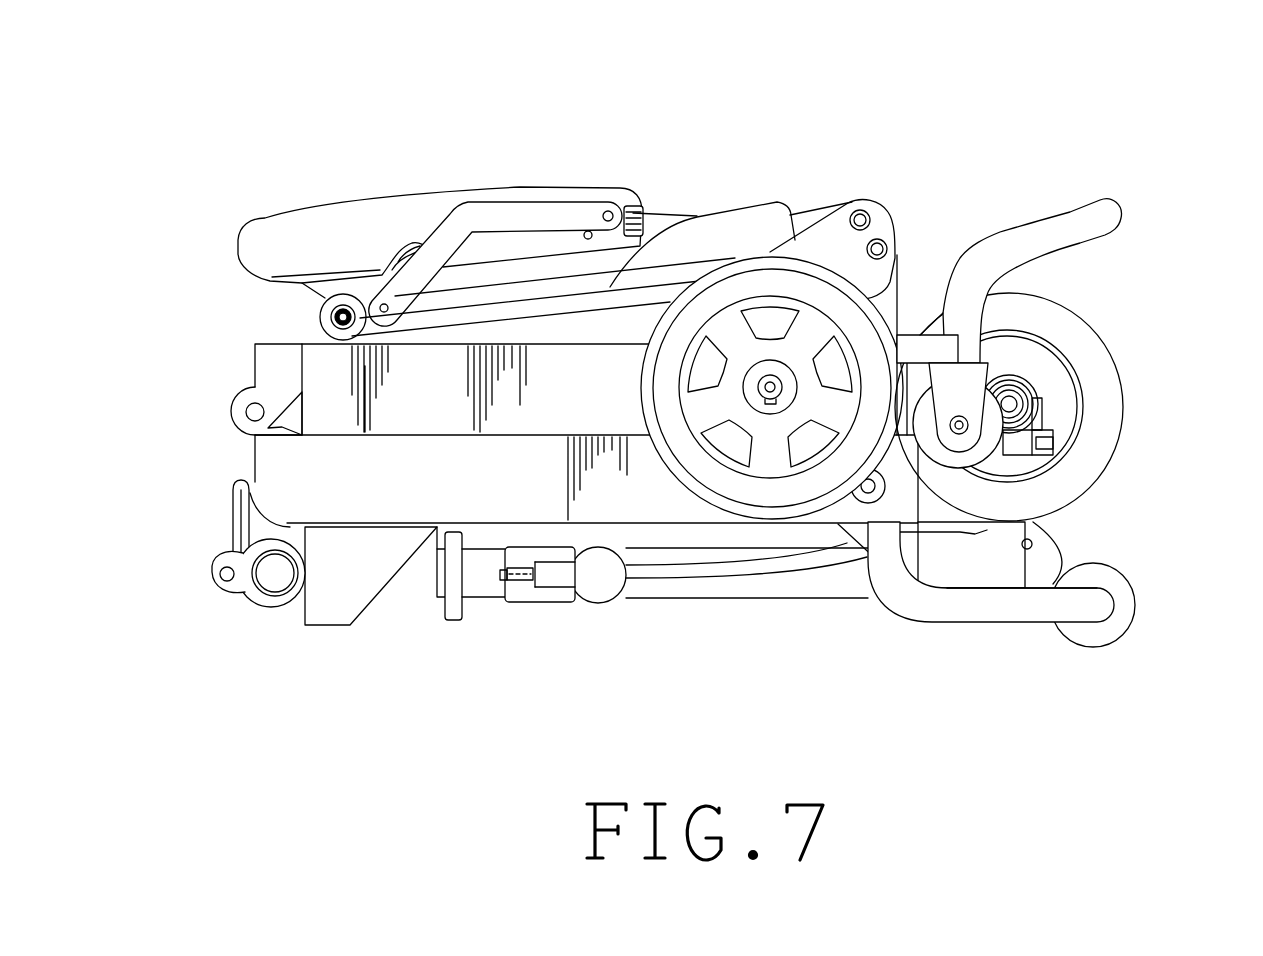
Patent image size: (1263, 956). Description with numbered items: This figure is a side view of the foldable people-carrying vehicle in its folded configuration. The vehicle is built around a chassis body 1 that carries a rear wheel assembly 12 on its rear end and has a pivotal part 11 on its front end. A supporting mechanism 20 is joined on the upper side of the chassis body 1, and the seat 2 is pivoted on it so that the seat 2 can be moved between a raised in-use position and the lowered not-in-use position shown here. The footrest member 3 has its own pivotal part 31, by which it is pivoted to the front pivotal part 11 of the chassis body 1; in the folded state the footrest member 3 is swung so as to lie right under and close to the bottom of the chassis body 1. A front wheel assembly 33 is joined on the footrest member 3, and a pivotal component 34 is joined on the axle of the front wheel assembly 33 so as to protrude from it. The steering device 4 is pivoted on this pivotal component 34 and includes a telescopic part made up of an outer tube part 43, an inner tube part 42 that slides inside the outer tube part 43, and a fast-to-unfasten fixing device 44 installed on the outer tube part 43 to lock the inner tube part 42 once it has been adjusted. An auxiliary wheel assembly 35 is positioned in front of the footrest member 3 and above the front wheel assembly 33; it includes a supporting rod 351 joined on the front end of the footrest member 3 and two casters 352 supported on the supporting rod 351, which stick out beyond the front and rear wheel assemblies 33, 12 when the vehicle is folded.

The chassis body 1 is at (340, 387).
The seat 2 is at (415, 222).
The supporting mechanism 20 is at (610, 287).
The rear wheel assembly 12 is at (865, 333).
The front wheel assembly 33 is at (1097, 370).
The pivotal part 11 is at (273, 368).
The pivotal part 31 is at (282, 430).
The pivotal component 34 is at (1053, 540).
The casters 352 is at (1127, 607).
The steering device 4 is at (280, 608).
The inner tube part 42 is at (415, 580).
The footrest member 3 is at (483, 503).
The fast-to-unfasten fixing device 44 is at (532, 610).
The outer tube part 43 is at (800, 580).
The supporting rod 351 is at (1038, 602).
The auxiliary wheel assembly 35 is at (1080, 652).